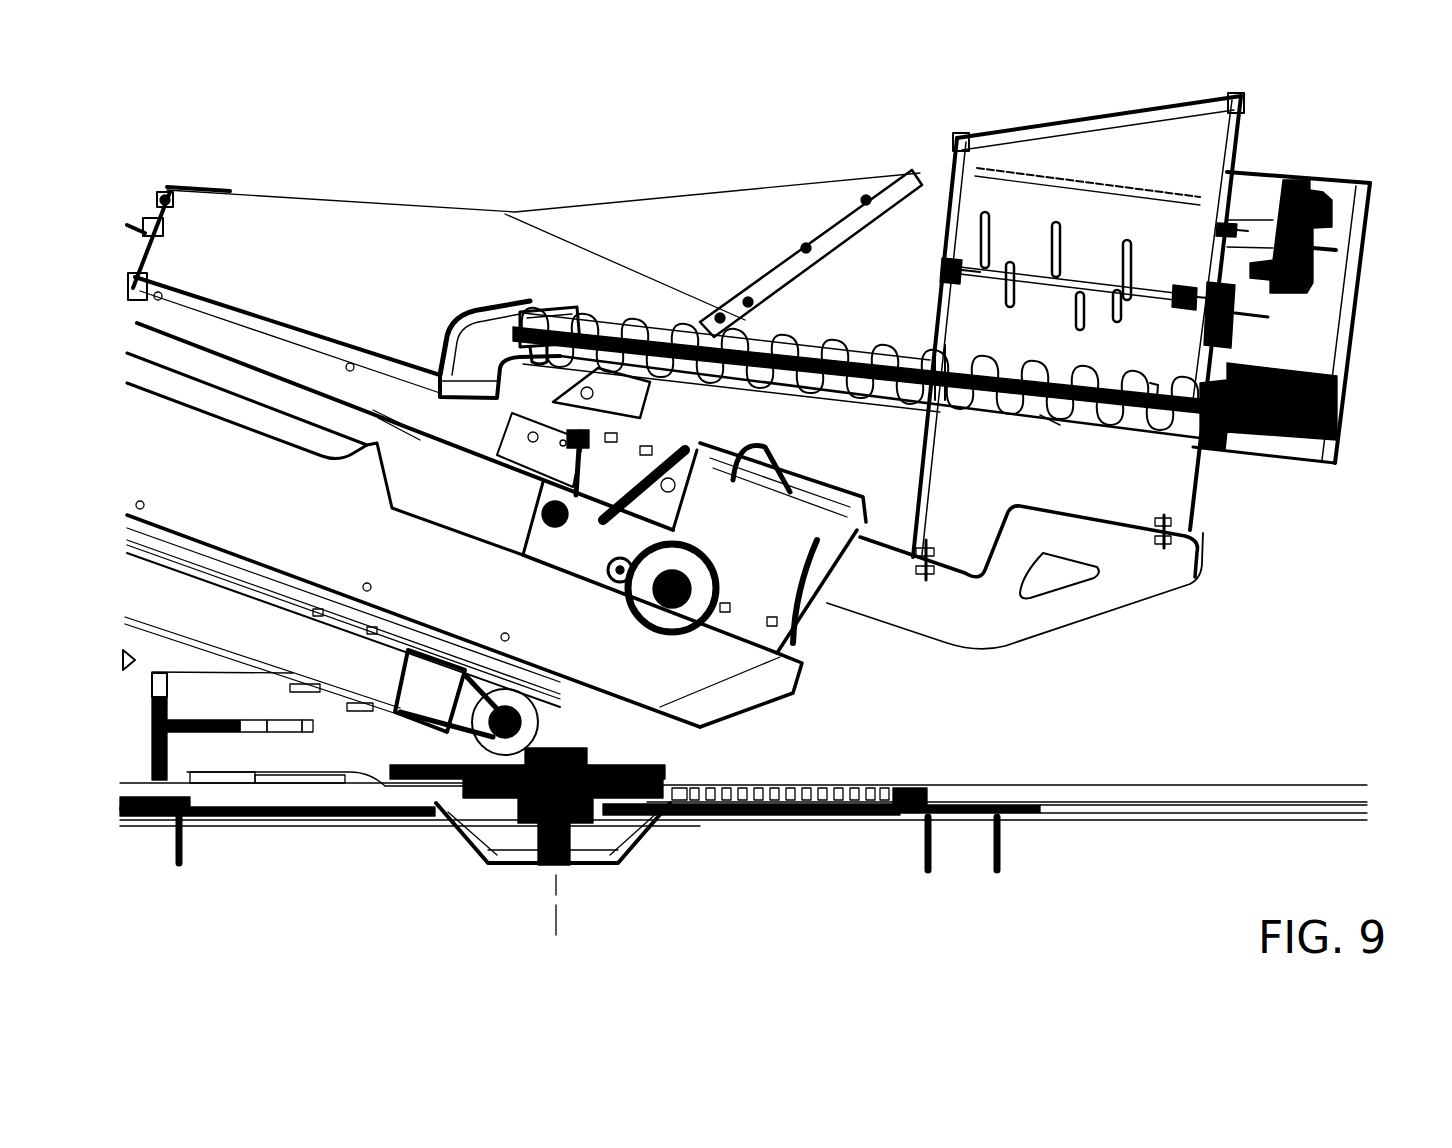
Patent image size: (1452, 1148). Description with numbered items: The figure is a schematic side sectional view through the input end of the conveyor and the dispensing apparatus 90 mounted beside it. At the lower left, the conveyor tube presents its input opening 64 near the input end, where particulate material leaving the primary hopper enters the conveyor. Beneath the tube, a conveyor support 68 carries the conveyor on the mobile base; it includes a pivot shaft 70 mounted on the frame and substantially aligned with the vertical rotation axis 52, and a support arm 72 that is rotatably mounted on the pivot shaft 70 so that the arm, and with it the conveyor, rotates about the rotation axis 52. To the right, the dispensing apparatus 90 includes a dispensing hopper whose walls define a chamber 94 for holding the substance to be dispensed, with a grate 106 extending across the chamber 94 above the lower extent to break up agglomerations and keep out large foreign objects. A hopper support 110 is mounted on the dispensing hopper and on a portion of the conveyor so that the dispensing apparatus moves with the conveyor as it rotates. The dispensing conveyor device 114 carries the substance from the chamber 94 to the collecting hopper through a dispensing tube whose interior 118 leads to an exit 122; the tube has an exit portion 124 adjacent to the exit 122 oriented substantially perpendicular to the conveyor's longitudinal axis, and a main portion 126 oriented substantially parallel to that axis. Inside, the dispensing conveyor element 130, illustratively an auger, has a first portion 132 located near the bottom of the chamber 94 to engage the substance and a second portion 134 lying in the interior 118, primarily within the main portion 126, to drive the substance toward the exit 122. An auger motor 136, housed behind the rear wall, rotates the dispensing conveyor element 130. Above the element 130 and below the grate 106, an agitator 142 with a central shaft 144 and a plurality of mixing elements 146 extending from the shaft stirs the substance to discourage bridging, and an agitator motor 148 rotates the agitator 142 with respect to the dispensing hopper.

The rotation axis 52 is at (560, 930).
The input opening 64 is at (237, 365).
The conveyor support 68 is at (780, 731).
The pivot shaft 70 is at (580, 837).
The support arm 72 is at (347, 747).
The dispensing apparatus 90 is at (938, 95).
The chamber 94 is at (1134, 157).
The grate 106 is at (1148, 270).
The hopper support 110 is at (893, 607).
The dispensing conveyor device 114 is at (855, 184).
The interior 118 is at (797, 390).
The exit 122 is at (460, 392).
The exit portion 124 is at (497, 303).
The main portion 126 is at (570, 293).
The dispensing conveyor element 130 is at (993, 417).
The first portion 132 is at (1090, 423).
The second portion 134 is at (733, 333).
The auger motor 136 is at (1267, 440).
The agitator 142 is at (1017, 232).
The central shaft 144 is at (1150, 300).
The mixing elements 146 is at (900, 317).
The agitator motor 148 is at (1230, 337).